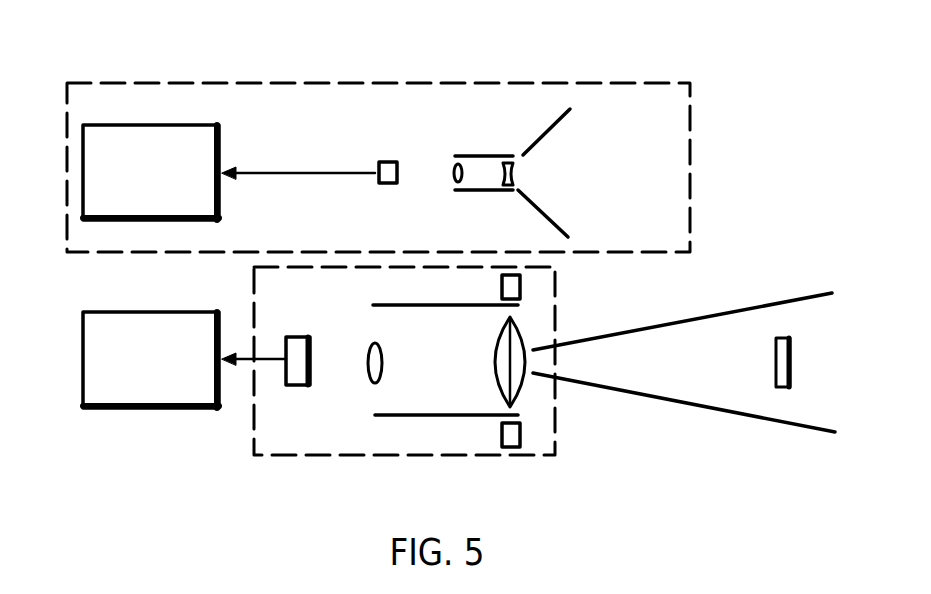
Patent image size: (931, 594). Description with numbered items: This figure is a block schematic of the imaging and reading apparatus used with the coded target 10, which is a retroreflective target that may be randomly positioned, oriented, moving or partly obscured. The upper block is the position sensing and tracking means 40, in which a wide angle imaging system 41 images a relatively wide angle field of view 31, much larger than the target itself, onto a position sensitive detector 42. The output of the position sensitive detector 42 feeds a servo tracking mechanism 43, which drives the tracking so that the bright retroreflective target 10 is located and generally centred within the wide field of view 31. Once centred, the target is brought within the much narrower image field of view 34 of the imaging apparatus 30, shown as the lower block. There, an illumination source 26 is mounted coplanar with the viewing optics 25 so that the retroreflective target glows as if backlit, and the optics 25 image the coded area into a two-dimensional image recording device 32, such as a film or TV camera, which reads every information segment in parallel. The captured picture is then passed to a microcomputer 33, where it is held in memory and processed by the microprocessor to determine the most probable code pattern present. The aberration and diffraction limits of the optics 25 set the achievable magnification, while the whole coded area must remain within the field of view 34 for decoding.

The coded target 10 is at (786, 390).
The optics 25 is at (364, 404).
The illumination source 26 is at (521, 433).
The imaging apparatus 30 is at (252, 403).
The field of view 31 is at (543, 140).
The image recording device 32 is at (306, 345).
The microcomputer 33 is at (177, 327).
The image field of view 34 is at (666, 326).
The position sensing and tracking means 40 is at (692, 171).
The wide angle imaging system 41 is at (490, 155).
The position sensitive detector 42 is at (392, 166).
The servo tracking mechanism 43 is at (153, 155).